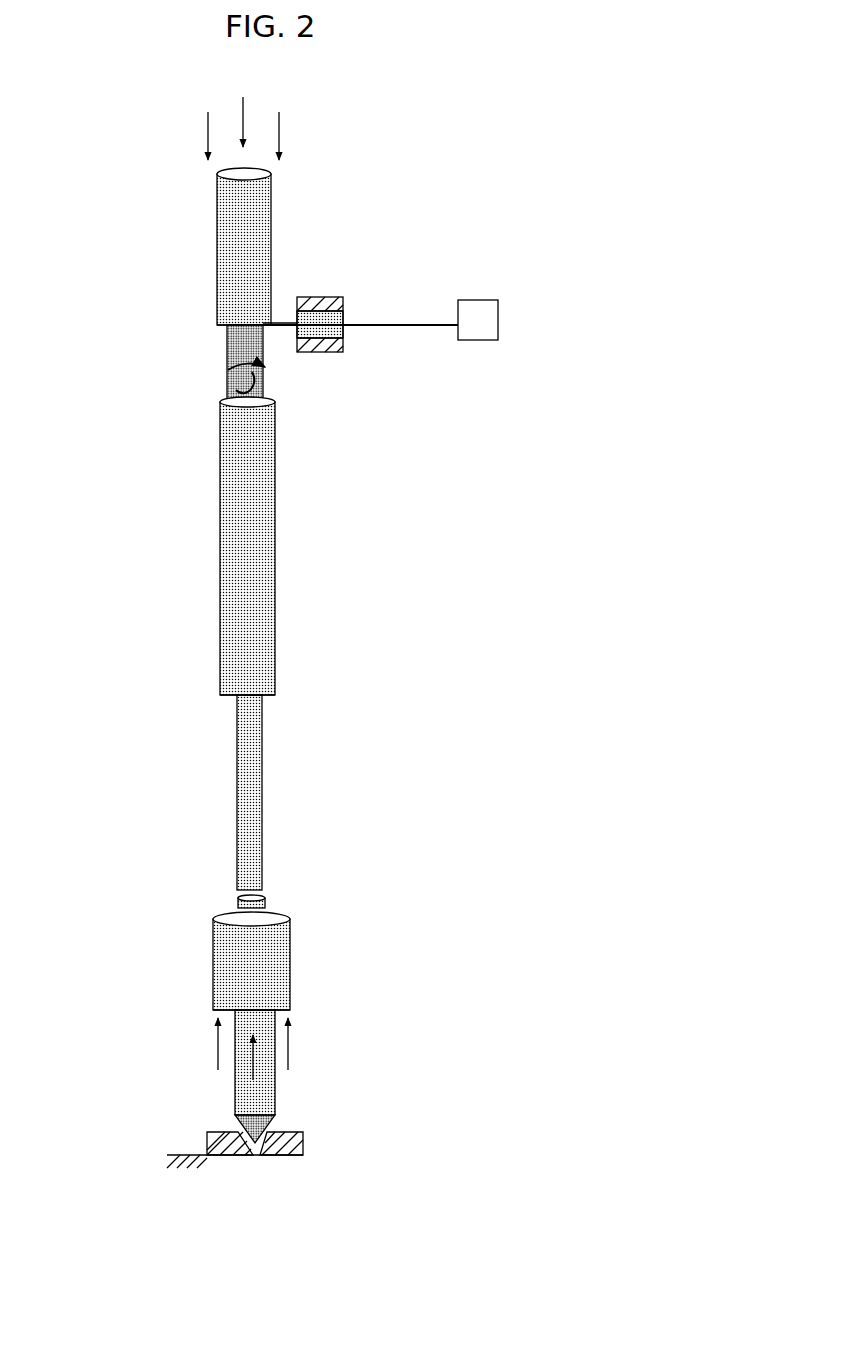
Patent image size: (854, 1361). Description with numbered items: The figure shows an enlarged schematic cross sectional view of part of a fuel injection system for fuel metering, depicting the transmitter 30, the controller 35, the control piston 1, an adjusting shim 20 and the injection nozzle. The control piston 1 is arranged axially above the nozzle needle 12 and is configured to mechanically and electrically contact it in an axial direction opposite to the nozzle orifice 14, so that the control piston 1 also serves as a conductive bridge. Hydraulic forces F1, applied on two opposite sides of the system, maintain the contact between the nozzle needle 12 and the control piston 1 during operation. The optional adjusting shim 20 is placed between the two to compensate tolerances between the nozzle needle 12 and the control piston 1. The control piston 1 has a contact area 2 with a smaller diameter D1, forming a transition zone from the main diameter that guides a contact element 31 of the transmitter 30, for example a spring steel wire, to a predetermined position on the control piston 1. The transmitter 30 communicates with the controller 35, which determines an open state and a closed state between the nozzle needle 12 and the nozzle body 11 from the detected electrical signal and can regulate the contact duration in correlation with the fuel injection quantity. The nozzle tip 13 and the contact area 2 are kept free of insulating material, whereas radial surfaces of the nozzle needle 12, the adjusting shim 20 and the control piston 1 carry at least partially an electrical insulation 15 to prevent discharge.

The control piston 1 is at (260, 560).
The contact area 2 is at (240, 343).
The diameter D1 is at (232, 392).
The nozzle body 11 is at (303, 1140).
The nozzle needle 12 is at (272, 990).
The nozzle tip 13 is at (283, 1120).
The nozzle orifice 14 is at (257, 1168).
The electrical insulation 15 is at (200, 238).
The adjusting shim 20 is at (268, 905).
The transmitter 30 is at (360, 292).
The contact element 31 is at (282, 325).
The controller 35 is at (480, 336).
The hydraulic forces F1 is at (248, 583).